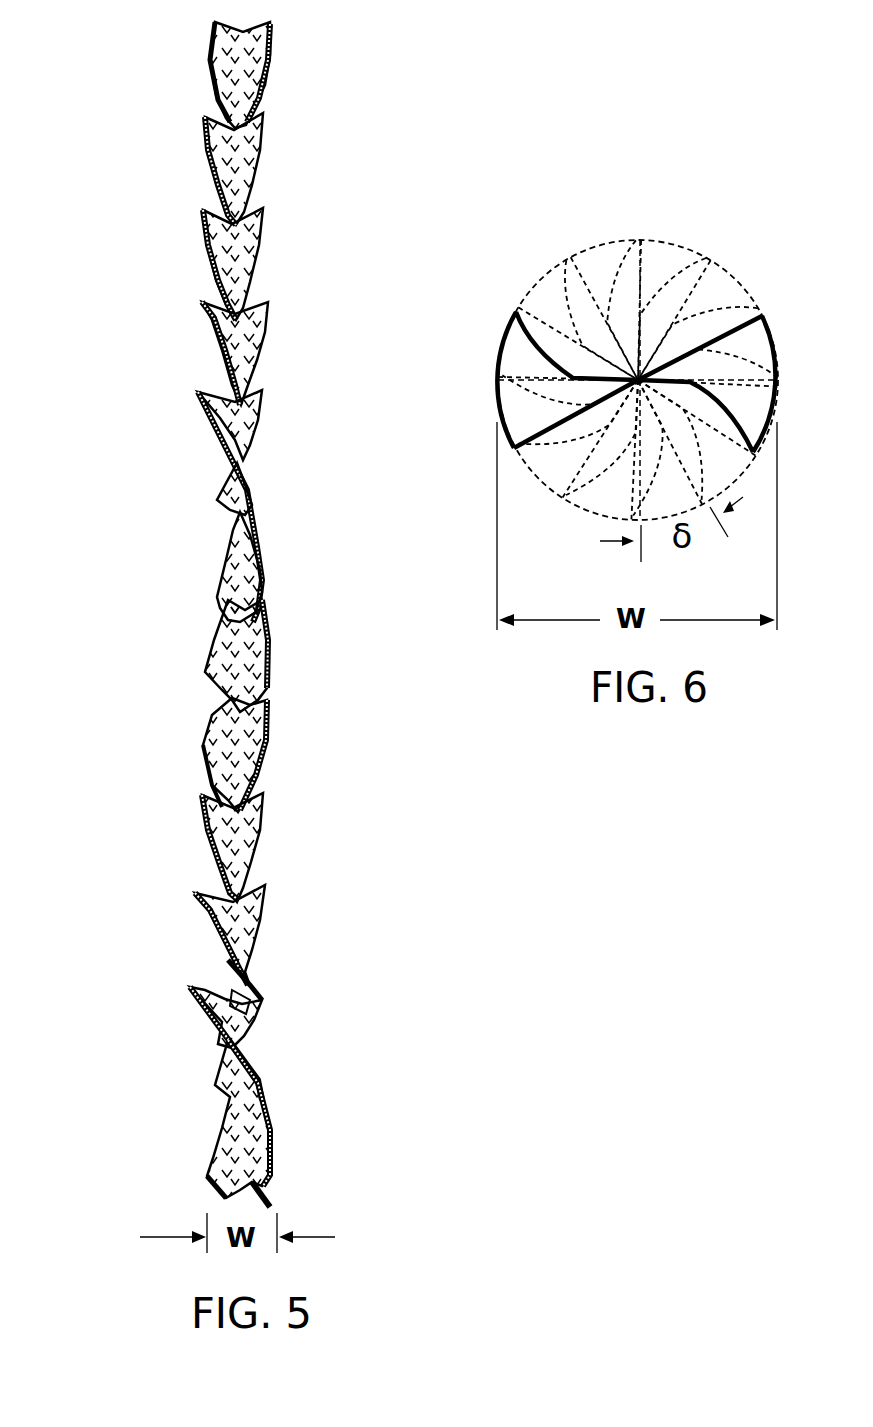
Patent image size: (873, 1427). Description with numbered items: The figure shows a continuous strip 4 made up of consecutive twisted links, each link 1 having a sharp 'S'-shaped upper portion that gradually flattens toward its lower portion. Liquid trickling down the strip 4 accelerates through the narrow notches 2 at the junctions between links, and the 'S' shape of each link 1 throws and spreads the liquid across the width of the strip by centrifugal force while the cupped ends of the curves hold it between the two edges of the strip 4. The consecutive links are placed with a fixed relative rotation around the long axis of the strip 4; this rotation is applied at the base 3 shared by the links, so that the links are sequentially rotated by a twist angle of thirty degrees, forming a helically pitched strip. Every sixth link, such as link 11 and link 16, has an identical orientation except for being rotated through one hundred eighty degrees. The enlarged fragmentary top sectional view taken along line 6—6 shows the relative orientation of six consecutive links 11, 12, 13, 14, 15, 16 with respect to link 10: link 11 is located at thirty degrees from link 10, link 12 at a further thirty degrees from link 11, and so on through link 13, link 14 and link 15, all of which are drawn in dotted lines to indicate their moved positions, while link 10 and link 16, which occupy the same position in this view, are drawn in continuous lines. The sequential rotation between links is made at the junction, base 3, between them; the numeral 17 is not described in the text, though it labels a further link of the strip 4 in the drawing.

In FIG. 5, the link 1 is at (265, 240).
In FIG. 5, the narrow notches 2 is at (262, 605).
In FIG. 6, the base 3 is at (598, 385).
In FIG. 5, the strip 4 is at (290, 61).
In FIG. 5, the section line 6— 6 is at (323, 338).
In FIG. 5, the link 10 is at (252, 368).
In FIG. 6, the link 10 is at (528, 455).
In FIG. 5, the link 11 is at (232, 455).
In FIG. 6, the link 11 is at (522, 378).
In FIG. 5, the link 12 is at (225, 553).
In FIG. 6, the link 12 is at (538, 322).
In FIG. 5, the link 13 is at (206, 650).
In FIG. 6, the link 13 is at (585, 290).
In FIG. 5, the link 14 is at (205, 754).
In FIG. 6, the link 14 is at (640, 262).
In FIG. 5, the link 15 is at (205, 848).
In FIG. 6, the link 15 is at (695, 287).
In FIG. 5, the link 16 is at (222, 950).
In FIG. 6, the link 16 is at (728, 338).
In FIG. 5, the blade portion 17 is at (240, 1140).